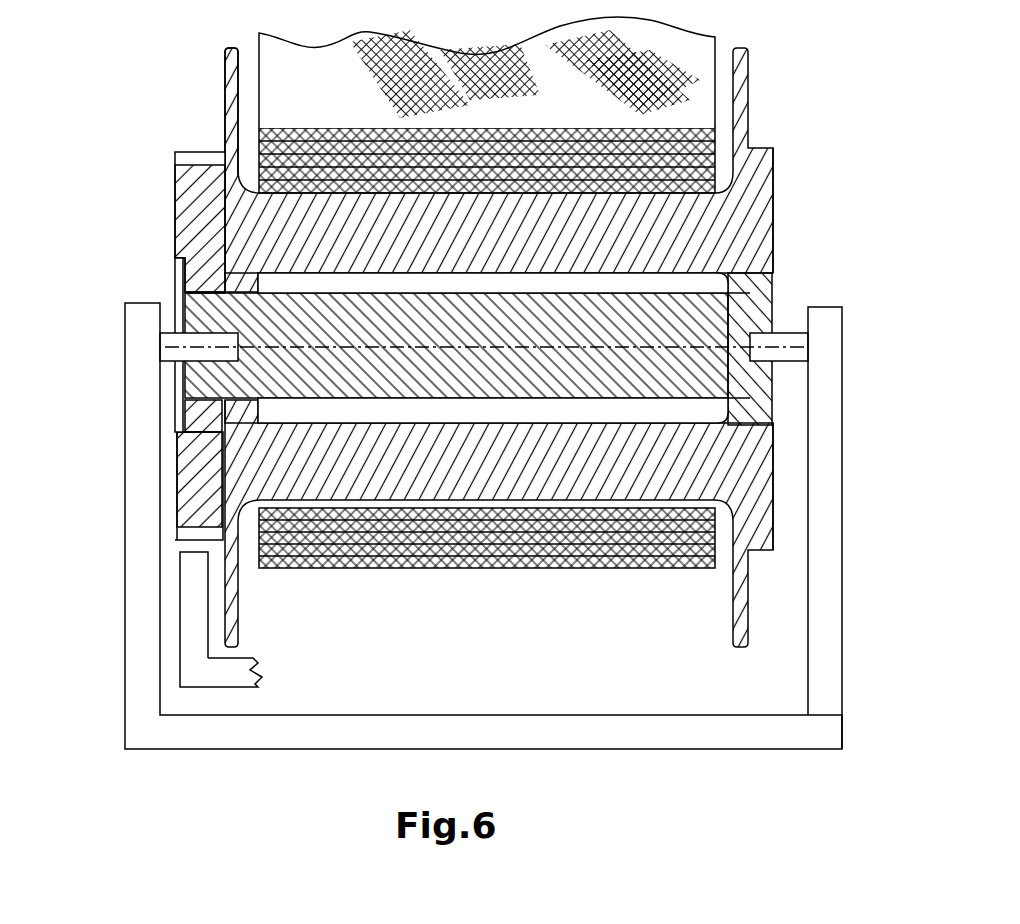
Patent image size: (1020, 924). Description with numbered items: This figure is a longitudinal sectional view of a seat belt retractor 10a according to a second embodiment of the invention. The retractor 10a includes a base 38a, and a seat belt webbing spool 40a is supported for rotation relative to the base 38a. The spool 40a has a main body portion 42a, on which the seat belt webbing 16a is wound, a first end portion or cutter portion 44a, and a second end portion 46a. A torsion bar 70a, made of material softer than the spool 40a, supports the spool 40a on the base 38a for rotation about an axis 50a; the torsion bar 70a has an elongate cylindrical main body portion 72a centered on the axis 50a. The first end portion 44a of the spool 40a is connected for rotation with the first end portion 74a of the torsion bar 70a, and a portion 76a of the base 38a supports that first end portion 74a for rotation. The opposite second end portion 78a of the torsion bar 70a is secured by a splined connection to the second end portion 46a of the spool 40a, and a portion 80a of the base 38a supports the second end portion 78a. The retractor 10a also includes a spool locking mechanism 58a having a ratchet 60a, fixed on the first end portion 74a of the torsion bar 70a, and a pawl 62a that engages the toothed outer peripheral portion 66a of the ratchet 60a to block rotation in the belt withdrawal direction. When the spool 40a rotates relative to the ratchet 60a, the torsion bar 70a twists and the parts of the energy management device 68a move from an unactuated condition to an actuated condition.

The seat belt retractor 10a is at (332, 790).
The seat belt webbing 16a is at (574, 573).
The base 38a is at (651, 757).
The seat belt webbing spool 40a is at (776, 169).
The main body portion 42a is at (433, 470).
The first end portion or cutter portion 44a is at (247, 283).
The second end portion 46a is at (755, 218).
The axis 50a is at (778, 335).
The spool locking mechanism 58a is at (163, 556).
The ratchet 60a is at (171, 493).
The pawl 62a is at (257, 656).
The toothed outer peripheral portion 66a is at (200, 150).
The energy management device 68a is at (208, 418).
The torsion bar 70a is at (778, 388).
The elongate cylindrical main body portion 72a is at (515, 375).
The first end portion 74a is at (237, 303).
The portion of the base 76a is at (123, 362).
The second end portion 78a is at (758, 417).
The portion of the base 80a is at (843, 635).